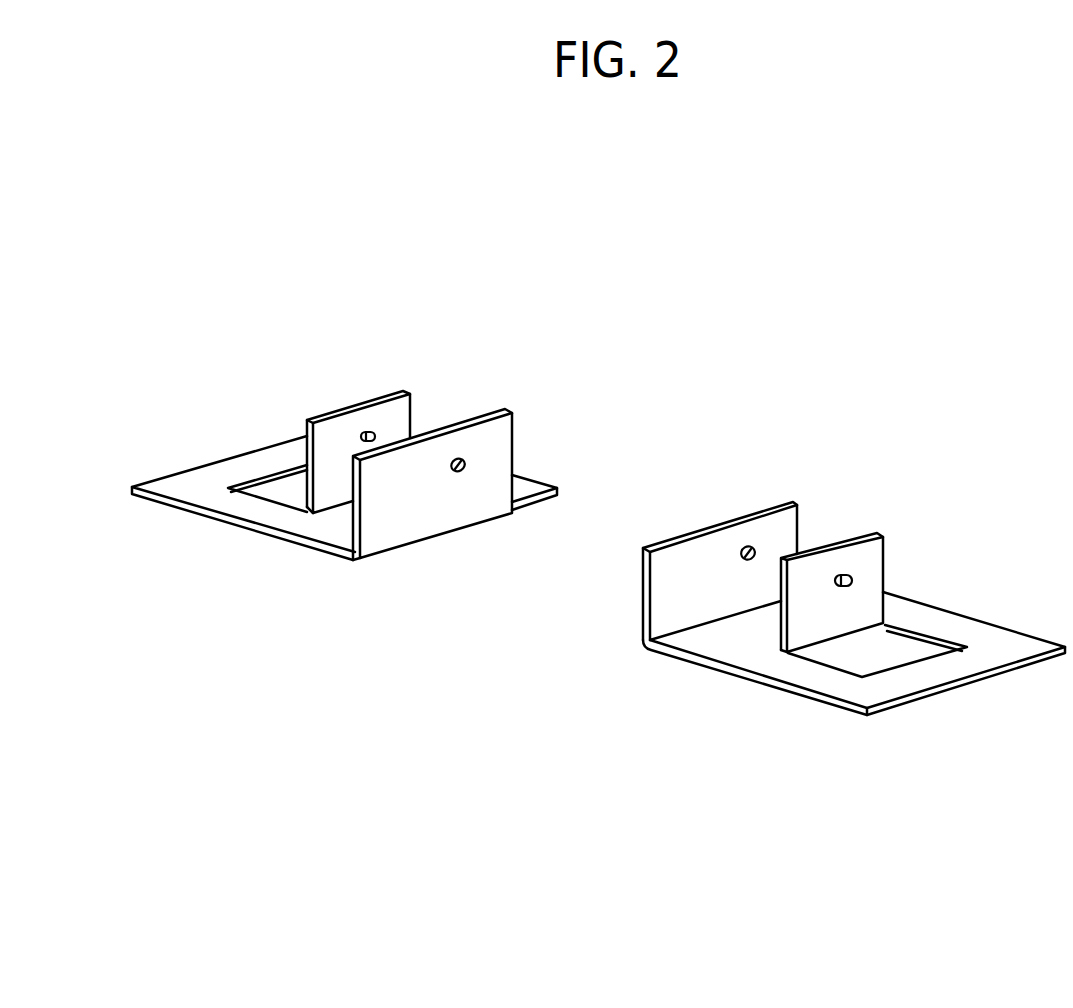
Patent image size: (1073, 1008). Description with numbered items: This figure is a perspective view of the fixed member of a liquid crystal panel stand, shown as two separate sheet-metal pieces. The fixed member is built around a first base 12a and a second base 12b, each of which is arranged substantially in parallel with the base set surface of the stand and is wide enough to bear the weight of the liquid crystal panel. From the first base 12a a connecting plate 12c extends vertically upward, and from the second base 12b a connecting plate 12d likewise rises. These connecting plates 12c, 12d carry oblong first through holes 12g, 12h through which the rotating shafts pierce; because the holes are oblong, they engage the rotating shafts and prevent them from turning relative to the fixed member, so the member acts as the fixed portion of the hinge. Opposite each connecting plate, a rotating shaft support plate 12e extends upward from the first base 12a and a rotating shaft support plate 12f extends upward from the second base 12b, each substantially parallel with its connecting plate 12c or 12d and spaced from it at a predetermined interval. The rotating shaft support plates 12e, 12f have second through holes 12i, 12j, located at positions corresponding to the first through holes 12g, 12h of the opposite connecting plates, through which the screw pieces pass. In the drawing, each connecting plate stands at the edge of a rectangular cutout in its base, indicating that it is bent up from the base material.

The first base 12a is at (277, 538).
The second base 12b is at (743, 682).
The connecting plate 12c is at (385, 393).
The connecting plate 12d is at (852, 540).
The rotating shaft support plate 12e is at (473, 418).
The rotating shaft support plate 12f is at (780, 510).
The first through hole 12g is at (362, 433).
The first through hole 12h is at (853, 581).
The second through hole 12i is at (466, 465).
The second through hole 12j is at (745, 546).